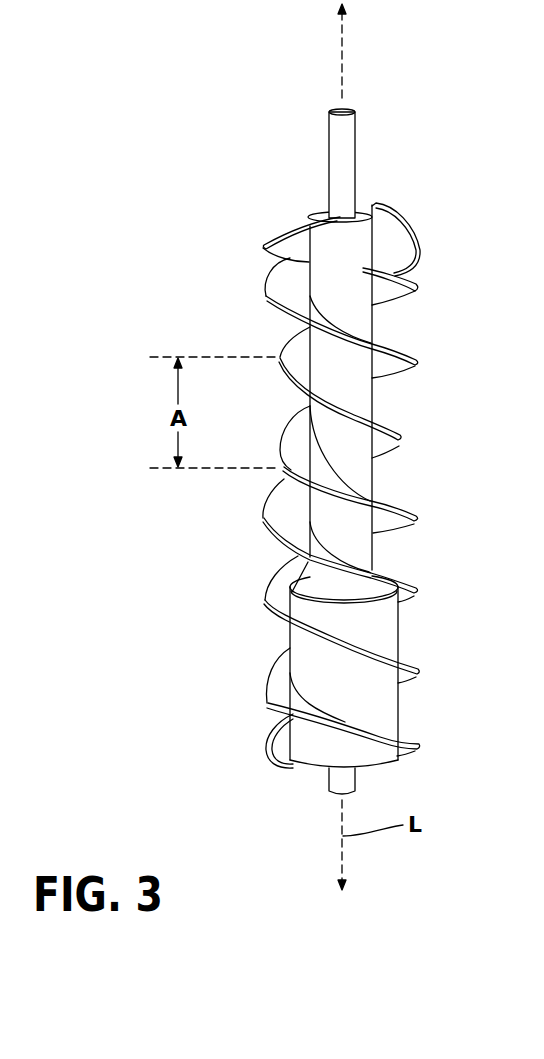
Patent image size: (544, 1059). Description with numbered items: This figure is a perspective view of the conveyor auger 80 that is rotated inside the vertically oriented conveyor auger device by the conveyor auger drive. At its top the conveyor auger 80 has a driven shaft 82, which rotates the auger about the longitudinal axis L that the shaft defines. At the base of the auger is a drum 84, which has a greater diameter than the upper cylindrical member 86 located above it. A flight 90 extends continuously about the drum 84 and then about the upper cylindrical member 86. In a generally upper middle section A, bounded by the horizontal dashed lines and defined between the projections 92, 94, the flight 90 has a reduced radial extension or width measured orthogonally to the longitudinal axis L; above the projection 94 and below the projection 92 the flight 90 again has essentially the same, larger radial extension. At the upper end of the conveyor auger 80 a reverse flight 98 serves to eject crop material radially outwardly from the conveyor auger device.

The conveyor auger 80 is at (190, 653).
The driven shaft 82 is at (355, 133).
The drum 84 is at (376, 633).
The upper cylindrical member 86 is at (356, 392).
The flight 90 is at (280, 742).
The projection 92 is at (283, 478).
The projection 94 is at (263, 357).
The reverse flight 98 is at (395, 212).